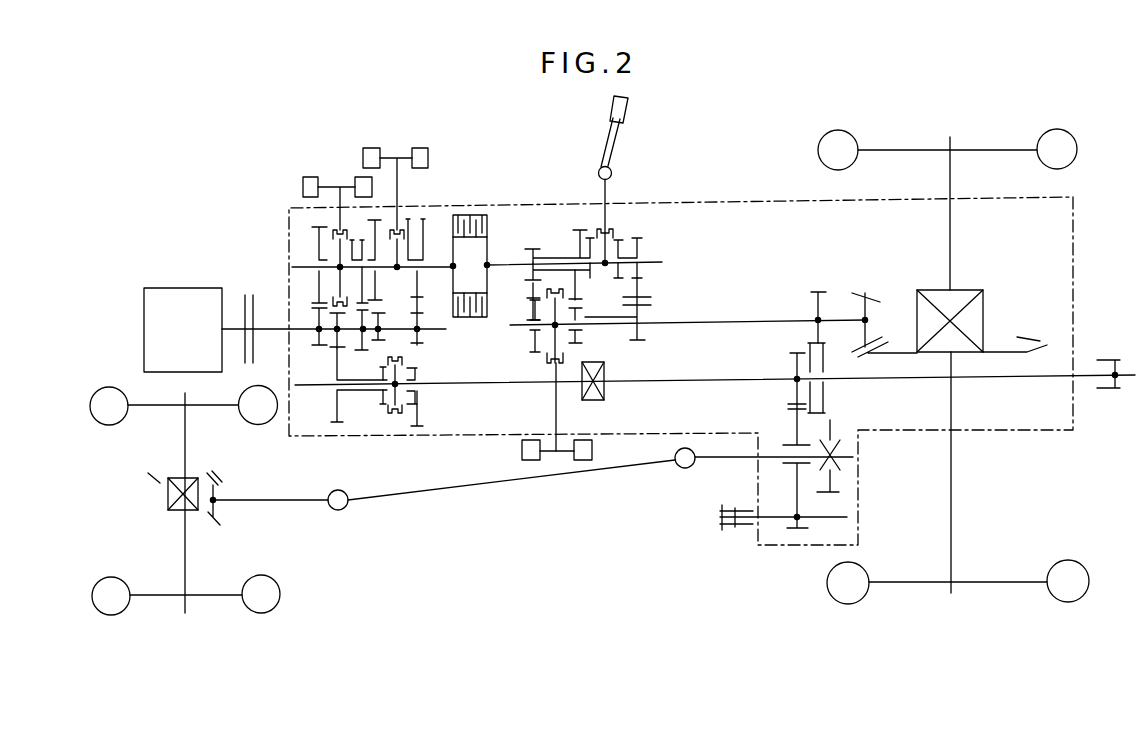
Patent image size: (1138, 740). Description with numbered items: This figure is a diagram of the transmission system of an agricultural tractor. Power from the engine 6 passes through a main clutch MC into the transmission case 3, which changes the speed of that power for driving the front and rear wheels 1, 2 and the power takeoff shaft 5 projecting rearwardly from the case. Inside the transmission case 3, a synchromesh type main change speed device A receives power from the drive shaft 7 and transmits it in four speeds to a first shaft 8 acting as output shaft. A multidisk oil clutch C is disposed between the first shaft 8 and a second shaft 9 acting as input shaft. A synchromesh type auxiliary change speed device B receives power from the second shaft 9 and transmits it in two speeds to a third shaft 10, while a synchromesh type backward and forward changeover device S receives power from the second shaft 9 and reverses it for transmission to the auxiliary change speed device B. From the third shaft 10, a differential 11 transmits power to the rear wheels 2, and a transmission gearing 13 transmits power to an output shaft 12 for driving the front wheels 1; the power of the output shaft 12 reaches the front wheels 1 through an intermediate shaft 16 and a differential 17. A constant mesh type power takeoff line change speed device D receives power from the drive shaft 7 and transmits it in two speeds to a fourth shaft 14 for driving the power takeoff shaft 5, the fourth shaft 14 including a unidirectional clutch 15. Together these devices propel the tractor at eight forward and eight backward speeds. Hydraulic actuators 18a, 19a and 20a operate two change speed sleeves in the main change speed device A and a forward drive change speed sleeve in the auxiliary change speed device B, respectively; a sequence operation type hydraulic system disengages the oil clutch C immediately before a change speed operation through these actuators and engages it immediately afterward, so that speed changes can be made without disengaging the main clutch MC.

The front wheels 1 is at (248, 427).
The rear wheels 2 is at (838, 130).
The transmission case 3 is at (711, 200).
The power takeoff shaft 5 is at (1119, 340).
The engine 6 is at (165, 295).
The drive shaft 7 is at (277, 328).
The first shaft 8 is at (436, 267).
The second shaft 9 is at (513, 262).
The third shaft 10 is at (752, 321).
The differential 11 is at (983, 291).
The output shaft 12 is at (713, 460).
The transmission gearing 13 is at (827, 409).
The fourth shaft 14 is at (700, 378).
The unidirectional clutch 15 is at (606, 392).
The intermediate shaft 16 is at (527, 478).
The differential 17 is at (168, 500).
The hydraulic actuator 18a is at (312, 177).
The hydraulic actuator 19a is at (419, 148).
The hydraulic actuator 20a is at (522, 450).
The main change speed device A is at (303, 248).
The auxiliary change speed device B is at (526, 347).
The oil clutch C is at (499, 221).
The power takeoff line change speed device D is at (330, 404).
The backward and forward changeover device S is at (630, 212).
The main clutch MC is at (249, 291).